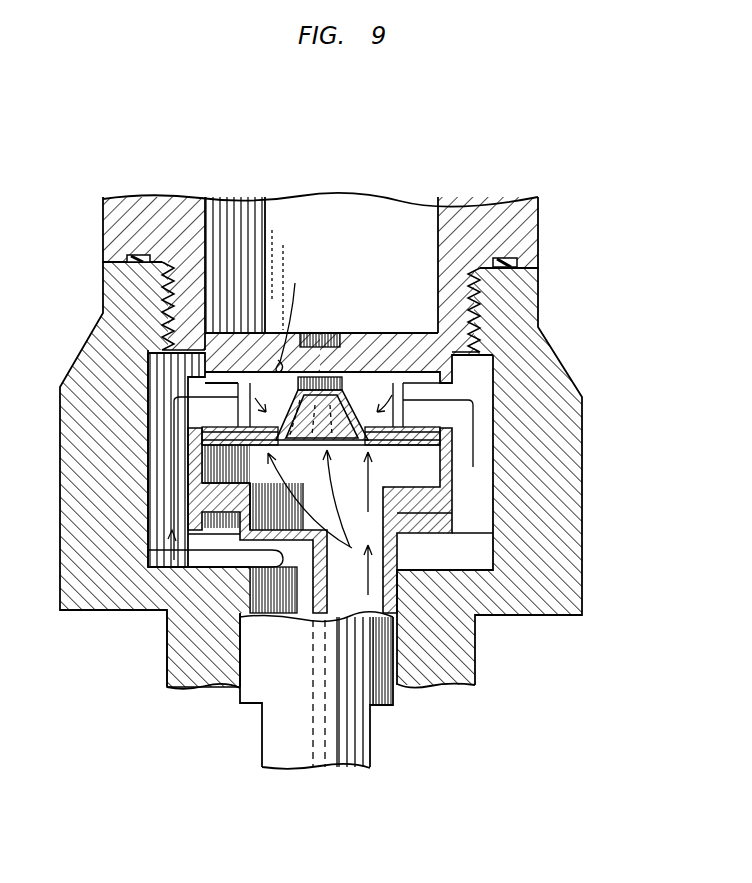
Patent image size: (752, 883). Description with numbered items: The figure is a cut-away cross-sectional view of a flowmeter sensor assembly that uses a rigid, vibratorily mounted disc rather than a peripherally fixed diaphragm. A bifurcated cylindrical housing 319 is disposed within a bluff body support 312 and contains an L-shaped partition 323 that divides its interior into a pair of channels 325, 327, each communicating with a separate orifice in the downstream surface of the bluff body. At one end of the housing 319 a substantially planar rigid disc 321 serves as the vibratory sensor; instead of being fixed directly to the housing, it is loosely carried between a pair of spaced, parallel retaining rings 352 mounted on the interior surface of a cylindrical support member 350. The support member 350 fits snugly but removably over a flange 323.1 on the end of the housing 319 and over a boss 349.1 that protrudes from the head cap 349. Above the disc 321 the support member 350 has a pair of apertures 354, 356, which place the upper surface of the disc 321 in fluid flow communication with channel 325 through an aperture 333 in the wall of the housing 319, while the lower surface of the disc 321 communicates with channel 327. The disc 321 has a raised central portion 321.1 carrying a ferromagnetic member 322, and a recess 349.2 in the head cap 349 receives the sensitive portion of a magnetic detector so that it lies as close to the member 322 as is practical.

The head cap 349 is at (405, 220).
The boss 349.1 is at (311, 315).
The recess 349.2 is at (330, 338).
The ferromagnetic member 322 is at (316, 388).
The aperture 354 is at (207, 386).
The aperture 356 is at (447, 390).
The aperture 333 is at (190, 548).
The rigid disc 321 is at (252, 487).
The raised central portion 321.1 is at (290, 415).
The retaining rings 352 is at (418, 440).
The cylindrical support member 350 is at (453, 507).
The flange 323.1 is at (415, 512).
The bifurcated cylindrical housing 319 is at (240, 668).
The channel 325 is at (270, 598).
The channel 327 is at (352, 603).
The housing body 312 is at (460, 648).
The L-shaped partition 323 is at (318, 770).